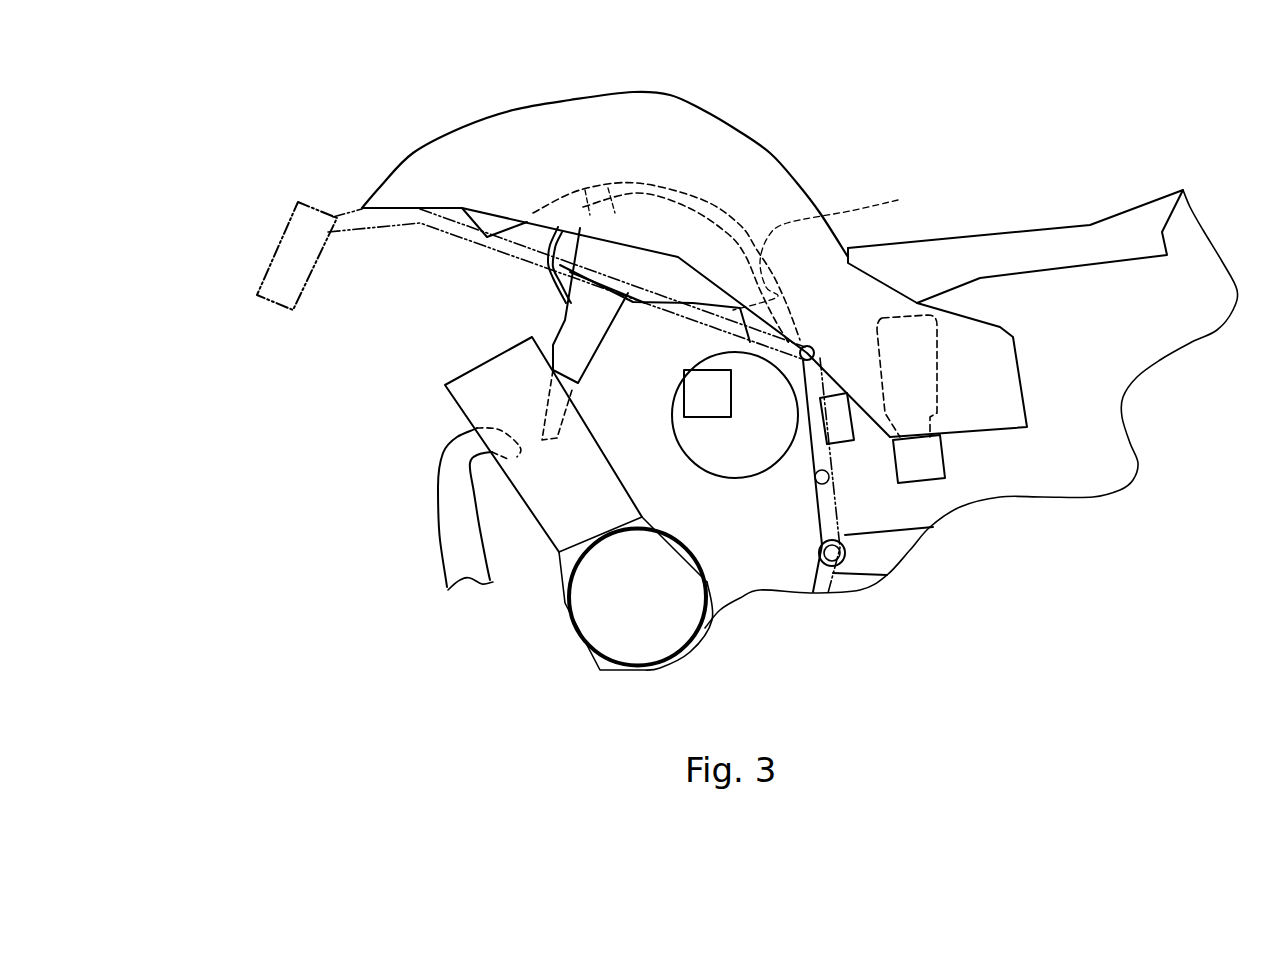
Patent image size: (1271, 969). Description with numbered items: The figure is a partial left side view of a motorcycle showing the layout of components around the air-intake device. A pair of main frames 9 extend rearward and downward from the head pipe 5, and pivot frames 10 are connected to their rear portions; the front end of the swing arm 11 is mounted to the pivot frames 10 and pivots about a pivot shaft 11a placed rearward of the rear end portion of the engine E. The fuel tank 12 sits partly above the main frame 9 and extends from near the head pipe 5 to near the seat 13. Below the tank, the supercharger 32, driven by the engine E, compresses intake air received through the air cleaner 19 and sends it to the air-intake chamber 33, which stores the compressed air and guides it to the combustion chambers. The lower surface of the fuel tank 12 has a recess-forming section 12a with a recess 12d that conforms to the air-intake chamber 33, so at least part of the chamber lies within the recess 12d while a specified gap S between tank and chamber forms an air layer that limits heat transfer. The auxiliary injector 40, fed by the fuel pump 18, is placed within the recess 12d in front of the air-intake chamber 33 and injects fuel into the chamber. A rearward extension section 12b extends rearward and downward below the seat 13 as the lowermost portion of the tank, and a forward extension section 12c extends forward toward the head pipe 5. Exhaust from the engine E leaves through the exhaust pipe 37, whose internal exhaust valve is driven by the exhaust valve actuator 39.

The head pipe 5 is at (287, 245).
The main frame 9 is at (357, 208).
The pivot frame 10 is at (842, 443).
The swing arm 11 is at (857, 568).
The pivot shaft 11a is at (812, 555).
The fuel tank 12 is at (810, 187).
The recess-forming section 12a is at (704, 178).
The rearward extension section 12b is at (948, 342).
The forward extension section 12c is at (517, 195).
The recess 12d is at (839, 246).
The seat 13 is at (1053, 245).
The fuel pump 18 is at (933, 382).
The air cleaner 19 is at (705, 420).
The supercharger 32 is at (735, 480).
The air-intake chamber 33 is at (655, 220).
The exhaust pipe 37 is at (447, 507).
The exhaust valve actuator 39 is at (843, 510).
The auxiliary injector 40 is at (582, 187).
The gap S is at (718, 222).
The engine E is at (547, 517).